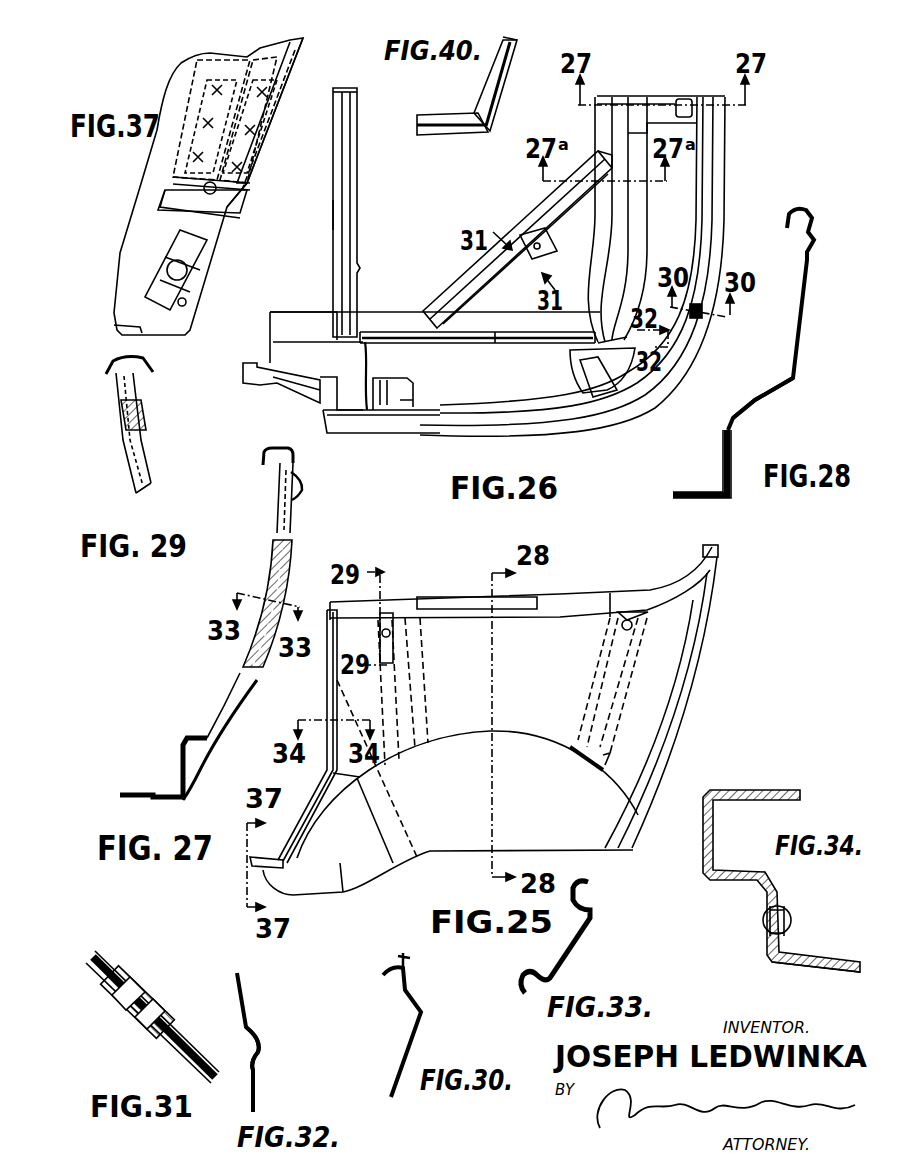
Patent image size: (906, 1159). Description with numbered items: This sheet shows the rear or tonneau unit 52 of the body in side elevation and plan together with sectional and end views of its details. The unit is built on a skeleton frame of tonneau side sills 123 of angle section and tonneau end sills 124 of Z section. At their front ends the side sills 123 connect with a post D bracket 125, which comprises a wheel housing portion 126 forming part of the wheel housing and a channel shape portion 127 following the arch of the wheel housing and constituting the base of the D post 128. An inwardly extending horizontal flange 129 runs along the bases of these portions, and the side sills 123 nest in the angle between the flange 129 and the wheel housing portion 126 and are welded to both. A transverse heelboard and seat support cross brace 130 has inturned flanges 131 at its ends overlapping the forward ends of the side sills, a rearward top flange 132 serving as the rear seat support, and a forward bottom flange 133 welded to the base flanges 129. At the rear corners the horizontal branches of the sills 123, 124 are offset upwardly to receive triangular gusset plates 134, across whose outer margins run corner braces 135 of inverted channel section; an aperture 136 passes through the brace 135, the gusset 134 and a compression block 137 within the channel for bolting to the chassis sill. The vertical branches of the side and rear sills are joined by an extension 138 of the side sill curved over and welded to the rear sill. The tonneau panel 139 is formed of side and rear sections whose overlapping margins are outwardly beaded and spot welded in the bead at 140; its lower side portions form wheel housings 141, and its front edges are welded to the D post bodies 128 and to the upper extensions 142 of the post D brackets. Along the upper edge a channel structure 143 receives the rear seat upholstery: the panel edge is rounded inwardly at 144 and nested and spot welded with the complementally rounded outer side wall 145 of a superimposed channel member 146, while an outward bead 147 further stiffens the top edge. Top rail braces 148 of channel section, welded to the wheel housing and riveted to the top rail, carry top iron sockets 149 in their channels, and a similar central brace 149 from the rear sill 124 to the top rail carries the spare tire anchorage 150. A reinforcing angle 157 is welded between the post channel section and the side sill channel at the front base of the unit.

In FIG. 37, the tonneau unit 52 is at (290, 72).
In FIG. 25, the tonneau unit 52 is at (660, 717).
In FIG. 40, the tonneau side sills 123 is at (453, 131).
In FIG. 26, the tonneau side sills 123 is at (413, 320).
In FIG. 28, the tonneau side sills 123 is at (722, 478).
In FIG. 40, the tonneau end sills 124 is at (520, 57).
In FIG. 26, the tonneau end sills 124 is at (620, 133).
In FIG. 27, the tonneau end sills 124 is at (183, 773).
In FIG. 37, the post D bracket 125 is at (227, 295).
In FIG. 26, the post D bracket 125 is at (290, 335).
In FIG. 25, the post D bracket 125 is at (450, 813).
In FIG. 26, the wheel housing portion 126 is at (367, 410).
In FIG. 26, the channel shape portion 127 is at (307, 383).
In FIG. 37, the D post 128 is at (272, 58).
In FIG. 25, the D post 128 is at (327, 673).
In FIG. 34, the D post 128 is at (708, 839).
In FIG. 37, the horizontal flange 129 is at (140, 327).
In FIG. 26, the horizontal flange 129 is at (307, 320).
In FIG. 26, the heelboard and seat support cross brace 130 is at (343, 180).
In FIG. 26, the inturned flanges 131 is at (363, 333).
In FIG. 26, the rearward flange 132 is at (352, 212).
In FIG. 26, the forward flange 133 is at (333, 212).
In FIG. 26, the triangular gusset plates 134 is at (577, 243).
In FIG. 31, the triangular gusset plates 134 is at (117, 980).
In FIG. 26, the corner braces 135 is at (545, 228).
In FIG. 31, the corner braces 135 is at (100, 993).
In FIG. 26, the aperture 136 is at (540, 232).
In FIG. 31, the aperture 136 is at (136, 1010).
In FIG. 31, the compression block 137 is at (156, 1022).
In FIG. 40, the extension 138 is at (501, 104).
In FIG. 26, the tonneau panel 139 is at (572, 266).
In FIG. 28, the tonneau panel 139 is at (802, 327).
In FIG. 25, the tonneau panel 139 is at (680, 640).
In FIG. 34, the tonneau panel 139 is at (816, 980).
In FIG. 32, the tonneau panel 139 is at (244, 1000).
In FIG. 32, the spot weld in bead 140 is at (250, 1048).
In FIG. 28, the wheel housings 141 is at (770, 405).
In FIG. 25, the wheel housings 141 is at (445, 771).
In FIG. 25, the upper extensions 142 is at (340, 737).
In FIG. 34, the upper extensions 142 is at (812, 958).
In FIG. 28, the channel structure 143 is at (807, 210).
In FIG. 28, the inwardly rounded upper edge 144 is at (804, 228).
In FIG. 28, the outer side wall 145 is at (814, 220).
In FIG. 28, the channel member 146 is at (788, 215).
In FIG. 28, the bead 147 is at (815, 240).
In FIG. 30, the bead 147 is at (422, 1012).
In FIG. 29, the top rail braces 148 is at (133, 383).
In FIG. 25, the top rail braces 148 is at (590, 697).
In FIG. 26, the top iron socket 149 is at (653, 100).
In FIG. 29, the top iron socket 149 is at (115, 427).
In FIG. 27, the top iron socket 149 is at (243, 658).
In FIG. 27, the spare tire anchorage 150 is at (280, 590).
In FIG. 33, the spare tire anchorage 150 is at (592, 915).
In FIG. 37, the reinforcing angle 157 is at (183, 200).
In FIG. 25, the reinforcing angle 157 is at (283, 872).